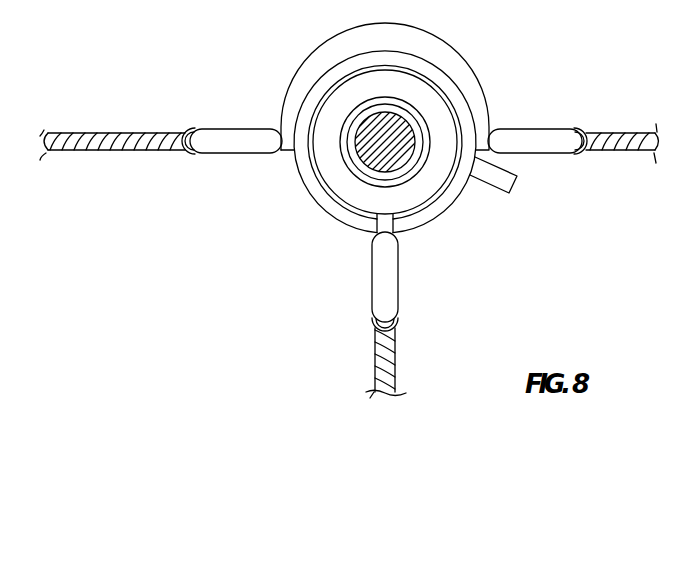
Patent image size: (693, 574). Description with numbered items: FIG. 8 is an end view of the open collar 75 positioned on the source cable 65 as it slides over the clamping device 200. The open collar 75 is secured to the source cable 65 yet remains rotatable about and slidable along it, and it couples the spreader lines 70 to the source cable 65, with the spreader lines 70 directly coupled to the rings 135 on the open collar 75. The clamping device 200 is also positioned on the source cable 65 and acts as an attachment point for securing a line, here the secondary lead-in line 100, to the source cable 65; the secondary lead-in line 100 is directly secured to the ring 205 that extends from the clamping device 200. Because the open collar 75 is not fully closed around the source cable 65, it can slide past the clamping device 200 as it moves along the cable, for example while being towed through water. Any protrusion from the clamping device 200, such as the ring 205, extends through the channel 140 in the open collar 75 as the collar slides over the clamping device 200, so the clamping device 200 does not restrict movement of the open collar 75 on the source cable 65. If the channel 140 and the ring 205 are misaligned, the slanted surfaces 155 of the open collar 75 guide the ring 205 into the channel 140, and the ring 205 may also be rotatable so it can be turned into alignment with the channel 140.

The open collar 75 is at (350, 48).
The clamping device 200 is at (332, 173).
The source cable 65 is at (392, 153).
The channel 140 is at (364, 232).
The slanted surfaces 155 is at (338, 222).
The rings 135 is at (243, 128).
The spreader lines 70 is at (121, 132).
The ring 205 is at (370, 293).
The secondary lead-in line 100 is at (395, 355).